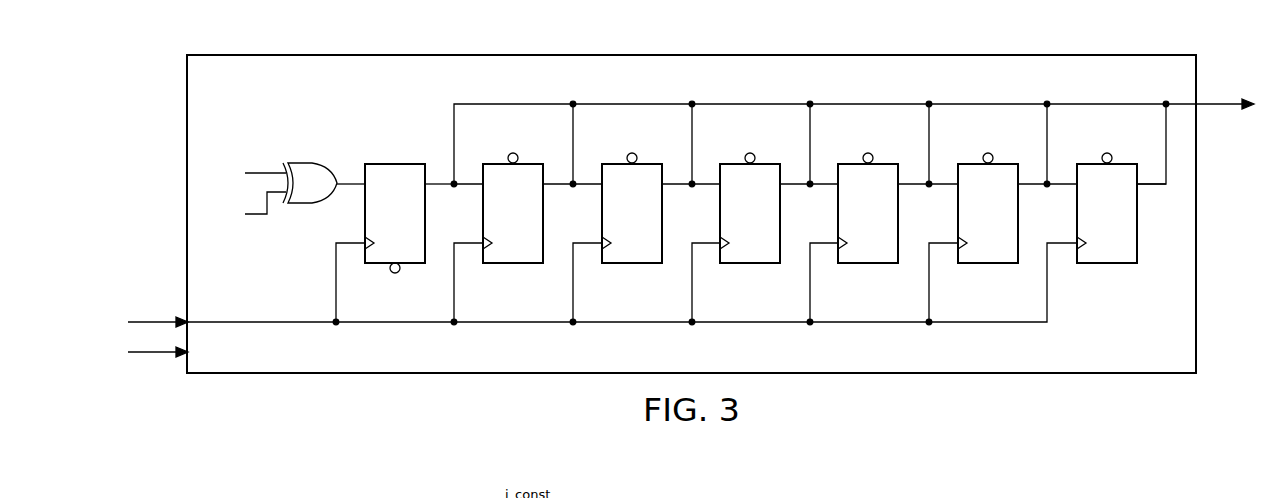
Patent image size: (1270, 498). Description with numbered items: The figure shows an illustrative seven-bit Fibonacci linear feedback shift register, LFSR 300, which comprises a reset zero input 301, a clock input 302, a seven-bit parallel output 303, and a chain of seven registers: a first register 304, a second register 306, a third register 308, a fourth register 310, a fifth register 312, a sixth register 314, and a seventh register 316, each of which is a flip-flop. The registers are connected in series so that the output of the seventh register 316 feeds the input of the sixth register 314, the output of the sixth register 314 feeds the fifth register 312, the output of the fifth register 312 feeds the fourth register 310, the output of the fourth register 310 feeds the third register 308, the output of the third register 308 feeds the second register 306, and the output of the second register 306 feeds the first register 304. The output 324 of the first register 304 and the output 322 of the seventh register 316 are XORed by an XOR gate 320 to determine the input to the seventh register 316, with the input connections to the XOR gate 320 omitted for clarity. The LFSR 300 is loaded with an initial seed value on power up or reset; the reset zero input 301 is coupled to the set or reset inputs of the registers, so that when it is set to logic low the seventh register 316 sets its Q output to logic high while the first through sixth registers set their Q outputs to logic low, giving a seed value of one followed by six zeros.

The 7-bit Fibonacci LFSR 300 is at (130, 100).
The reset zero input 301 is at (158, 355).
The clock input 302 is at (158, 320).
The 7-bit parallel output 303 is at (1226, 102).
The first register 304 is at (1107, 266).
The second register 306 is at (989, 266).
The third register 308 is at (869, 266).
The fourth register 310 is at (749, 266).
The fifth register 312 is at (632, 266).
The sixth register 314 is at (512, 266).
The seventh register 316 is at (386, 270).
The XOR gate 320 is at (343, 150).
The output of the seventh register 322 is at (267, 173).
The output of the first register 324 is at (257, 218).